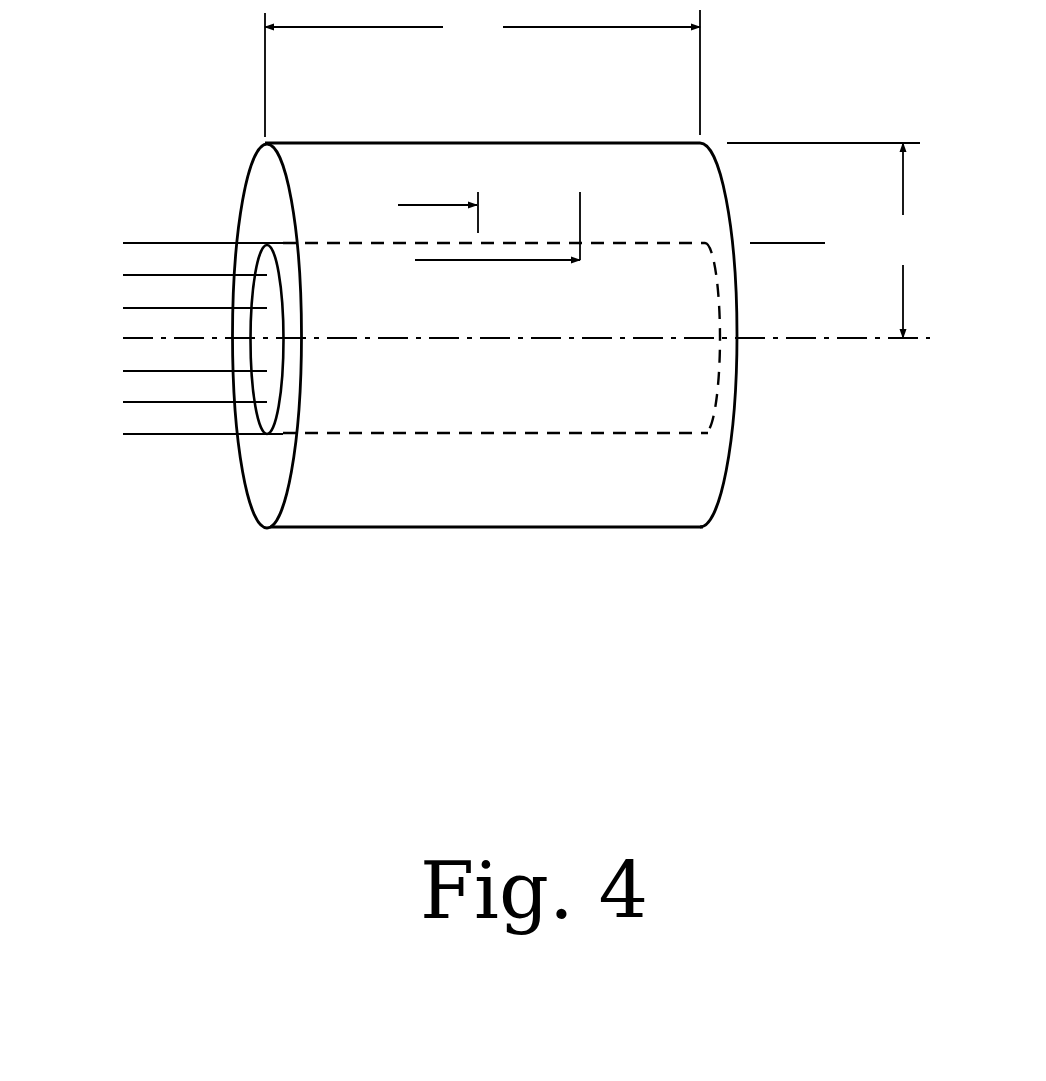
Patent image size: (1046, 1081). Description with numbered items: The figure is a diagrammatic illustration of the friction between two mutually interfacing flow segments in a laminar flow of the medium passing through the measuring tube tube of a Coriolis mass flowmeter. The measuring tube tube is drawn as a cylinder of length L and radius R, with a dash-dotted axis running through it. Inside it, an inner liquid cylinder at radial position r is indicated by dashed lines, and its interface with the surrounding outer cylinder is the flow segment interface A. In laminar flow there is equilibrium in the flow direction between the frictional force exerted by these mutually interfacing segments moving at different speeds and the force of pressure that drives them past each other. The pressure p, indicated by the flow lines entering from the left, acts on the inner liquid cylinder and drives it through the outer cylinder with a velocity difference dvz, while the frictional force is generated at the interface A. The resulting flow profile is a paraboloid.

The tube length L is at (482, 73).
The radius of the measuring tube R is at (824, 240).
The radial position r is at (825, 307).
The velocity difference dvz is at (489, 224).
The flow segment interface A is at (501, 338).
The pressure p is at (490, 338).
The measuring tube is at (485, 335).